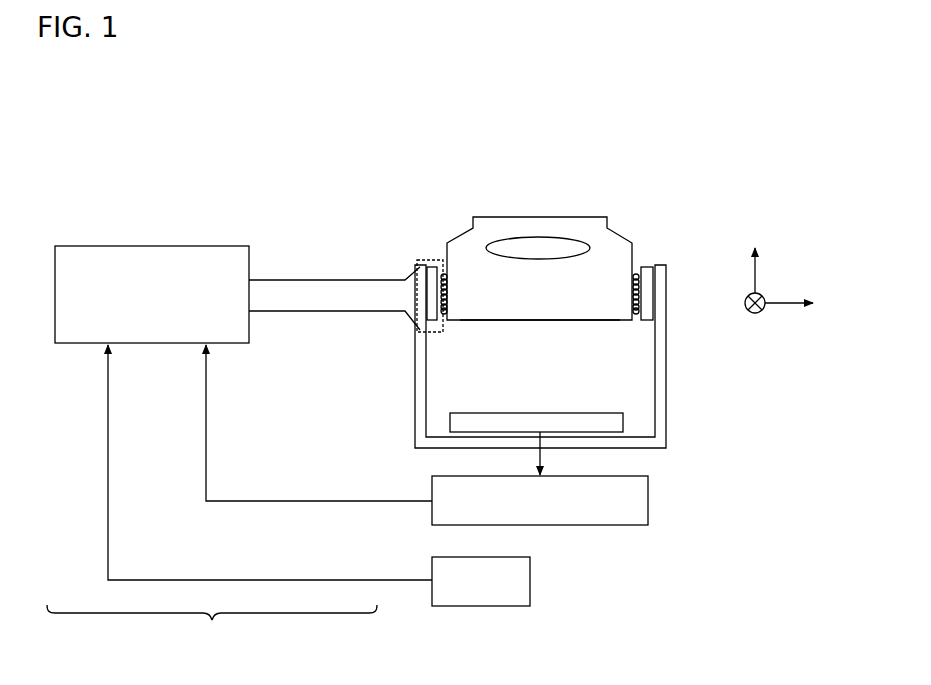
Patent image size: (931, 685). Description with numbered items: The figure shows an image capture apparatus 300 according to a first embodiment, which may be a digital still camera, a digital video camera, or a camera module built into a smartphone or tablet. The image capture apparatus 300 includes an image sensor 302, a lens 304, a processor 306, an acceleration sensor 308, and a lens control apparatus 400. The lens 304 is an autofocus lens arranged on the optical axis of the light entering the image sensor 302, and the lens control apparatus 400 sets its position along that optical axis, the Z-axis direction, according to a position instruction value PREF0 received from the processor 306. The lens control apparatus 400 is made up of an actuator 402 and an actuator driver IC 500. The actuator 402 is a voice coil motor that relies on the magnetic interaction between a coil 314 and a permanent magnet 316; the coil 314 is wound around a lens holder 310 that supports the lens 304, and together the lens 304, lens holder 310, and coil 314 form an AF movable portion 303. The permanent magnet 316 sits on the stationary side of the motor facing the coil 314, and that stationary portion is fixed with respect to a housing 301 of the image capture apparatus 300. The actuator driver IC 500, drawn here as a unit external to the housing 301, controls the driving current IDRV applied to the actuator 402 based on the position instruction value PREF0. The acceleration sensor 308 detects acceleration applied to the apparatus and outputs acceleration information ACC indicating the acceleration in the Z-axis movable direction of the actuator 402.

The image capture apparatus 300 is at (740, 127).
The housing 301 is at (667, 328).
The image sensor 302 is at (600, 412).
The AF movable portion 303 is at (541, 335).
The lens 304 is at (557, 237).
The processor 306 is at (648, 494).
The acceleration sensor 308 is at (530, 576).
The lens holder 310 is at (463, 247).
The coil 314 is at (636, 273).
The permanent magnet 316 is at (433, 266).
The lens control apparatus 400 is at (212, 627).
The actuator 402 is at (440, 339).
The actuator driver IC 500 is at (176, 245).